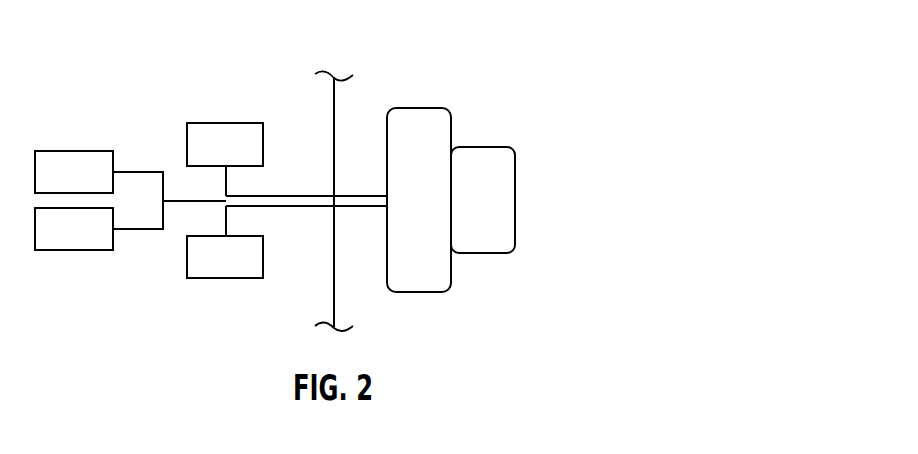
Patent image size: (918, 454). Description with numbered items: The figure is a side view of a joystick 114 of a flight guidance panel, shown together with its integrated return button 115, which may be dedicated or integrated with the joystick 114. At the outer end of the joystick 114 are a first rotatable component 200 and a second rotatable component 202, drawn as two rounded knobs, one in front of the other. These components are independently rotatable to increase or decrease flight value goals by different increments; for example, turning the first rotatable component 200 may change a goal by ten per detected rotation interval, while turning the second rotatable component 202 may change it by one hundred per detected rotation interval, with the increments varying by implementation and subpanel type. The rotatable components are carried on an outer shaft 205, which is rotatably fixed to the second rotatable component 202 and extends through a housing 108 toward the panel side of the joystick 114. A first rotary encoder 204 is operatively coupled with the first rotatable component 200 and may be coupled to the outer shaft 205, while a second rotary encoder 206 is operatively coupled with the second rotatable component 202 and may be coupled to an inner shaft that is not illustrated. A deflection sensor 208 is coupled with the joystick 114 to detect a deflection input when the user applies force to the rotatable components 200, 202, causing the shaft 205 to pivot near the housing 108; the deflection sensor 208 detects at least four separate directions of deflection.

The joystick 114 is at (548, 28).
The integrated return button 115 is at (95, 186).
The first rotary encoder 204 is at (95, 242).
The second rotary encoder 206 is at (247, 158).
The deflection sensor 208 is at (247, 271).
The outer shaft 205 is at (313, 194).
The housing 108 is at (336, 307).
The second rotatable component 202 is at (419, 108).
The first rotatable component 200 is at (482, 147).